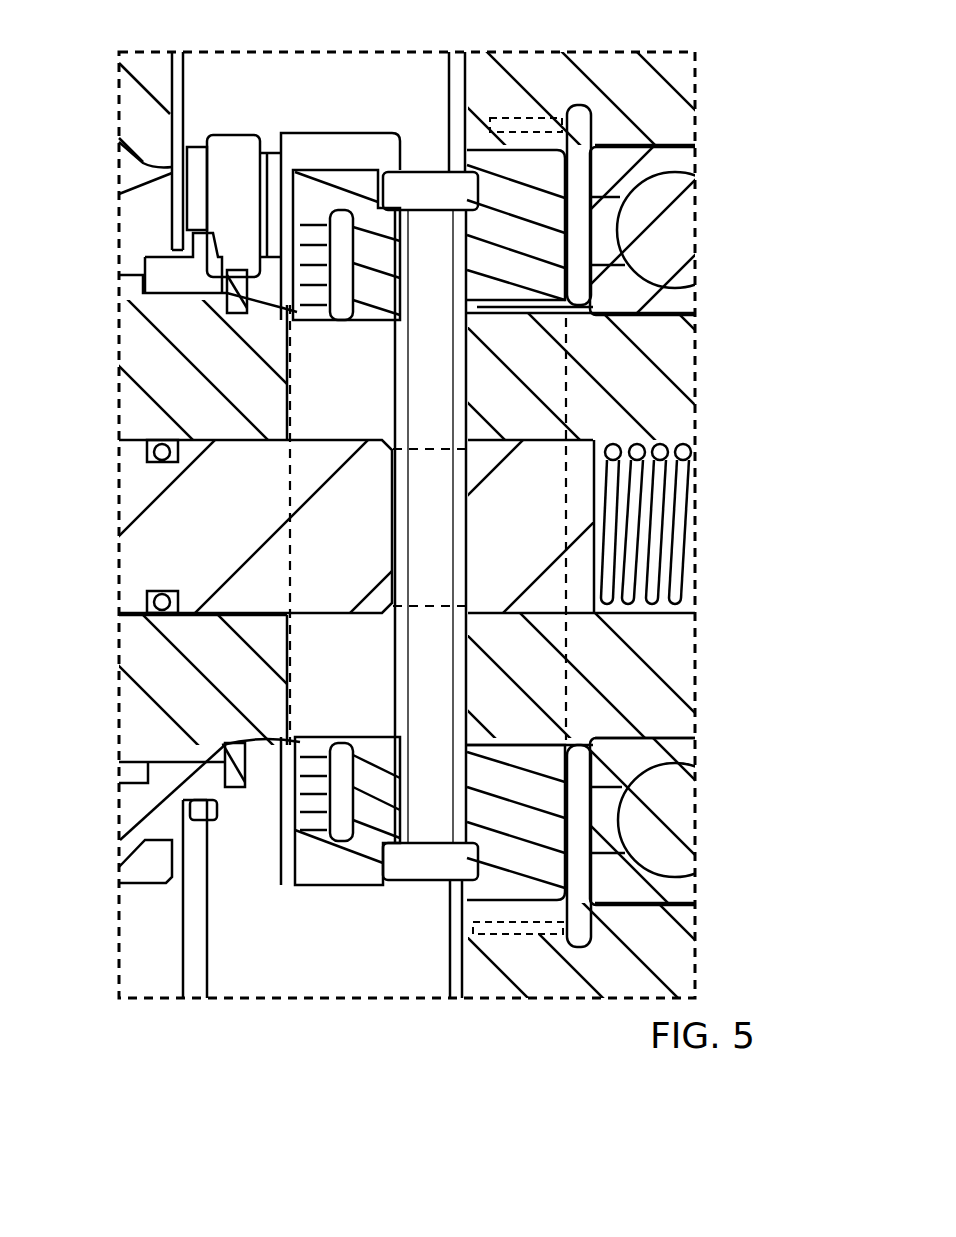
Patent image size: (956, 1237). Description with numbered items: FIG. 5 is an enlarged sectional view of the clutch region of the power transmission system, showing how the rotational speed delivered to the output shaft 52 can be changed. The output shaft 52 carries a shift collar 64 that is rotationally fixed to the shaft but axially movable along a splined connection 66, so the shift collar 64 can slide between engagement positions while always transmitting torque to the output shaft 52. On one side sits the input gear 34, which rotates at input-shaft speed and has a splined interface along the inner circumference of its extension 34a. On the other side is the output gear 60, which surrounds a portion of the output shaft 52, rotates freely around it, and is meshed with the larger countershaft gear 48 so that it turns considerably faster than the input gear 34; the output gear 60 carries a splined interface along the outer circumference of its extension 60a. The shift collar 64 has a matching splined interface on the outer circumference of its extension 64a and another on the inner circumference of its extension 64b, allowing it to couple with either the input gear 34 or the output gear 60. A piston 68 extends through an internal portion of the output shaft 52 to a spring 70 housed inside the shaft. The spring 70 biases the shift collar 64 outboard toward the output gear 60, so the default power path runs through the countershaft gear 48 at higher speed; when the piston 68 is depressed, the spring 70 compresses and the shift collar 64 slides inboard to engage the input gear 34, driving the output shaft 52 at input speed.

The input gear 34 is at (668, 67).
The extension of input gear 34a is at (528, 128).
The outboard countershaft gear 48 is at (152, 108).
The output shaft 52 is at (153, 653).
The output gear 60 is at (152, 215).
The extension of output gear 60a is at (196, 260).
The shift collar 64 is at (433, 812).
The extension of shift collar 64a is at (540, 284).
The extension of shift collar 64b is at (308, 188).
The splined connection 66 is at (527, 313).
The piston 68 is at (168, 530).
The spring 70 is at (675, 566).